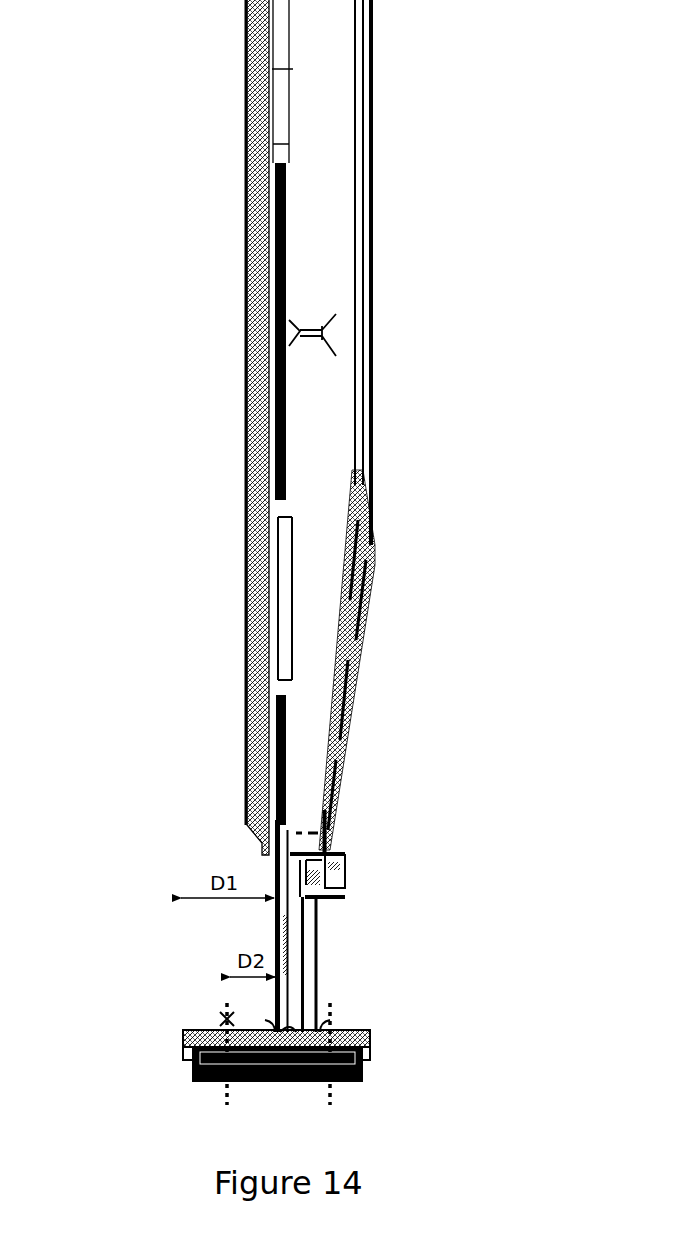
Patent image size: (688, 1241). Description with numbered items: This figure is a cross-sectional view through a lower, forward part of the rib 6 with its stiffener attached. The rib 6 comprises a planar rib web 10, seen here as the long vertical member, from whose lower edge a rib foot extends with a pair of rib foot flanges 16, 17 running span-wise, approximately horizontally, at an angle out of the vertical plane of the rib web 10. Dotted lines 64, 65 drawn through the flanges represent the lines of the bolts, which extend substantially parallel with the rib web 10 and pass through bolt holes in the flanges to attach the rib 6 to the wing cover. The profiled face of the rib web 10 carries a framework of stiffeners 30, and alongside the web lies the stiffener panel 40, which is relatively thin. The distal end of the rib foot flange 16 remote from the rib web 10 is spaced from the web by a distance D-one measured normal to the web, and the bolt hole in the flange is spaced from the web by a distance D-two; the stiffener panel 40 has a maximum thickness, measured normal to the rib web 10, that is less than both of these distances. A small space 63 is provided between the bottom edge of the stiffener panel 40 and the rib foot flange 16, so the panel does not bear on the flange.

The rib 6 is at (404, 455).
The rib web 10 is at (276, 876).
The rib foot flange 16 is at (186, 1043).
The rib foot flange 17 is at (372, 1046).
The stiffener 30 is at (360, 199).
The stiffener panel 40 is at (252, 527).
The space 63 is at (246, 937).
The dotted line 64 is at (223, 1020).
The dotted line 65 is at (336, 1010).